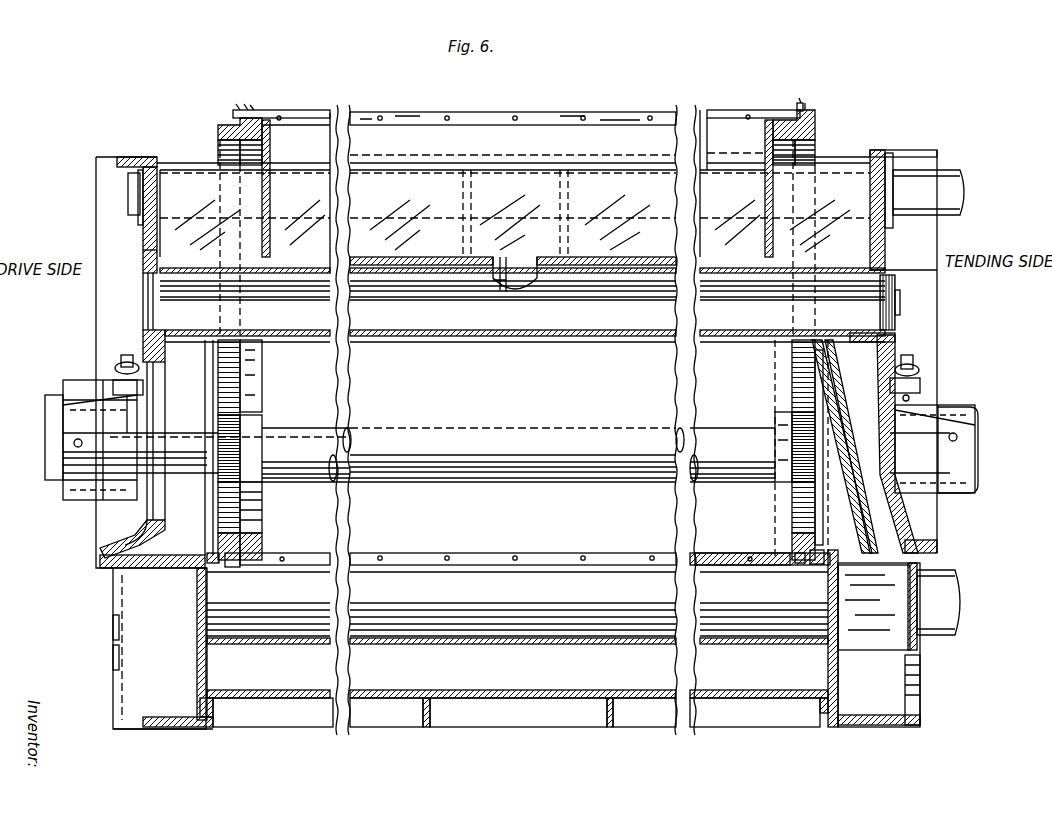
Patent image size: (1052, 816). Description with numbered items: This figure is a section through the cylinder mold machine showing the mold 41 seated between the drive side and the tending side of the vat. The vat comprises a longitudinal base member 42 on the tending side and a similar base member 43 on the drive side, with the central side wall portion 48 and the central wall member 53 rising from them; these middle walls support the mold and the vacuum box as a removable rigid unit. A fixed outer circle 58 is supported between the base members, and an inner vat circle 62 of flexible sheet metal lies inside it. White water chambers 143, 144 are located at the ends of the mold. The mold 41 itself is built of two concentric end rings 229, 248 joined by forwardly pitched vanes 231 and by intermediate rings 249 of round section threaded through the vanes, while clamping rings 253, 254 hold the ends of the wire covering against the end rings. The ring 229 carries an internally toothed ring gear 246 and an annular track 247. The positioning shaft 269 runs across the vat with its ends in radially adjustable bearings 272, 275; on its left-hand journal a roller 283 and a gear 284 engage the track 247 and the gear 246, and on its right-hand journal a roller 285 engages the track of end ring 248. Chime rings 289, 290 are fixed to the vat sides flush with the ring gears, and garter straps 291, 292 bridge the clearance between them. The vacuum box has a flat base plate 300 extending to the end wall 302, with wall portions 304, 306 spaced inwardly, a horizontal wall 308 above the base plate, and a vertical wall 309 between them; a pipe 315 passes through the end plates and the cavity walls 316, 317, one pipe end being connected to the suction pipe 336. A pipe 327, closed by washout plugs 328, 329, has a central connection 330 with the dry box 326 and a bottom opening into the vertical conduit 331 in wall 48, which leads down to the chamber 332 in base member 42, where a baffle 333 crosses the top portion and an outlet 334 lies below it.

The mold 41 is at (632, 102).
The longitudinal base member 42 is at (918, 645).
The longitudinal base member 43 is at (113, 590).
The central side wall portion 48 is at (888, 250).
The central wall member 53 is at (143, 235).
The fixed outer circle 58 is at (490, 692).
The inner vat circle 62 is at (735, 643).
The white water chamber 143 is at (835, 522).
The white water chamber 144 is at (175, 518).
The end ring 229 is at (212, 122).
The vanes 231 is at (424, 112).
The ring gear 246 is at (218, 360).
The annular track 247 is at (250, 368).
The end ring 248 is at (827, 127).
The intermediate rings 249 is at (583, 116).
The clamping ring 253 is at (238, 112).
The clamping ring 254 is at (804, 106).
The positioning shaft 269 is at (432, 414).
The bearing 272 is at (960, 420).
The bearing 275 is at (75, 432).
The roller 283 is at (252, 430).
The gear 284 is at (241, 425).
The roller 285 is at (785, 418).
The chime ring 289 is at (210, 568).
The chime ring 290 is at (820, 566).
The garter strap 291 is at (222, 565).
The garter strap 292 is at (812, 565).
The base plate 300 is at (492, 268).
The end wall 302 is at (147, 250).
The wall portion 304 is at (765, 135).
The wall portion 306 is at (271, 143).
The horizontal wall 308 is at (836, 160).
The vertical wall 309 is at (420, 180).
The pipe 315 is at (339, 114).
The wall 316 is at (545, 192).
The wall 317 is at (468, 182).
The dry box 326 is at (553, 282).
The pipe 327 is at (577, 332).
The washout plug 328 is at (895, 320).
The washout plug 329 is at (143, 325).
The connection 330 is at (515, 285).
The vertical conduit 331 is at (795, 365).
The chamber 332 is at (848, 668).
The baffle 333 is at (895, 607).
The outlet 334 is at (918, 697).
The suction pipe 336 is at (950, 175).